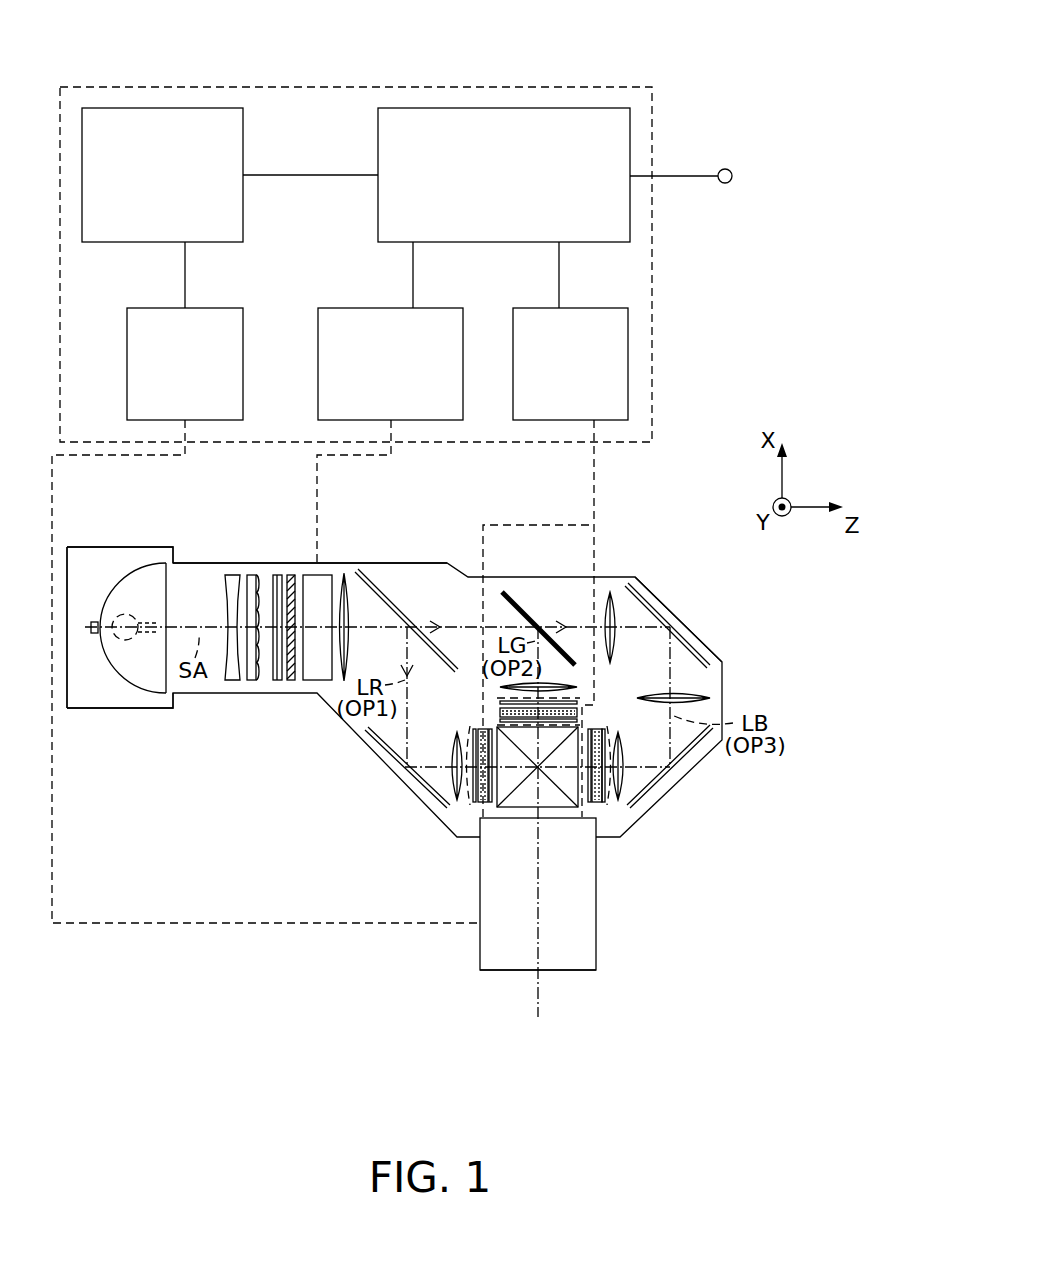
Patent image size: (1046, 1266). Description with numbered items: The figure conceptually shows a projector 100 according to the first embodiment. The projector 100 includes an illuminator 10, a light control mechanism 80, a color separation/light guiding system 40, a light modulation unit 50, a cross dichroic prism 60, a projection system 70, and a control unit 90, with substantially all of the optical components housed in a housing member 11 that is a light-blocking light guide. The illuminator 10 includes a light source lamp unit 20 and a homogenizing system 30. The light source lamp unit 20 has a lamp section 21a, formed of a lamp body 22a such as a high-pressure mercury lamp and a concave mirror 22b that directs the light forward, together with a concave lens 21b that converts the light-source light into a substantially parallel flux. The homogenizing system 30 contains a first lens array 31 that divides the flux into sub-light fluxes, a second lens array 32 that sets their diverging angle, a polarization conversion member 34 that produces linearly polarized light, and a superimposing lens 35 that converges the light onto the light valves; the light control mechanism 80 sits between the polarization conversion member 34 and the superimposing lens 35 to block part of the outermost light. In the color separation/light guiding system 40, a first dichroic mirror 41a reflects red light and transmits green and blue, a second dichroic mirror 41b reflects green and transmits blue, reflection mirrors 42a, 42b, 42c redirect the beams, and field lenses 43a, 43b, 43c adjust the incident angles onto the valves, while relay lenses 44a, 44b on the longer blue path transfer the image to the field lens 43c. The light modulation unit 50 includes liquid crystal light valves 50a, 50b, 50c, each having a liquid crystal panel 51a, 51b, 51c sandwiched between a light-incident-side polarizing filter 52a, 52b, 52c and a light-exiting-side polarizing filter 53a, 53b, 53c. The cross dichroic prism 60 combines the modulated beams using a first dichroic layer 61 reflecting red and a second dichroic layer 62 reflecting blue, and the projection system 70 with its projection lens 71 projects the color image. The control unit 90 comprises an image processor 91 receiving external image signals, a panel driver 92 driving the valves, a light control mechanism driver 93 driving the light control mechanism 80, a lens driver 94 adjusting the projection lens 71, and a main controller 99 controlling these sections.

The projector 100 is at (748, 38).
The control unit 90 is at (652, 300).
The main controller 99 is at (226, 117).
The image processor 91 is at (563, 117).
The lens driver 94 is at (165, 313).
The light control mechanism driver 93 is at (372, 313).
The panel driver 92 is at (583, 313).
The illuminator 10 is at (235, 523).
The light source lamp unit 20 is at (128, 693).
The lamp body 22a is at (120, 640).
The concave mirror 22b is at (130, 577).
The lamp section 21a is at (168, 590).
The concave lens 21b is at (232, 681).
The homogenizing system 30 is at (275, 653).
The first lens array 31 is at (250, 573).
The second lens array 32 is at (282, 575).
The polarization conversion member 34 is at (290, 681).
The light control mechanism 80 is at (325, 685).
The superimposing lens 35 is at (345, 573).
The color separation/light guiding system 40 is at (462, 560).
The first dichroic mirror 41a is at (378, 593).
The second dichroic mirror 41b is at (505, 592).
The reflection mirror 42a is at (393, 765).
The reflection mirror 42b is at (700, 650).
The reflection mirror 42c is at (690, 755).
The field lens 43a is at (452, 780).
The field lens 43b is at (582, 688).
The field lens 43c is at (625, 783).
The first relay lens 44a is at (613, 593).
The relay lens 44b is at (712, 702).
The housing member 11 is at (682, 618).
The light modulation unit 50 is at (521, 810).
The liquid crystal light valve 50a is at (399, 815).
The liquid crystal light valve 50b is at (538, 720).
The liquid crystal light valve 50c is at (661, 815).
The liquid crystal panel 51a is at (475, 803).
The liquid crystal panel 51b is at (500, 712).
The liquid crystal panel 51c is at (603, 808).
The light-incident-side polarizing filter 52a is at (483, 805).
The light-incident-side polarizing filter 52b is at (577, 712).
The light-incident-side polarizing filter 52c is at (597, 810).
The light-exiting-side polarizing filter 53a is at (490, 805).
The light-exiting-side polarizing filter 53b is at (578, 721).
The light-exiting-side polarizing filter 53c is at (590, 808).
The cross dichroic prism 60 is at (563, 830).
The first dichroic layer 61 is at (553, 787).
The second dichroic layer 62 is at (524, 787).
The projection system 70 is at (503, 985).
The projection lens 71 is at (582, 957).